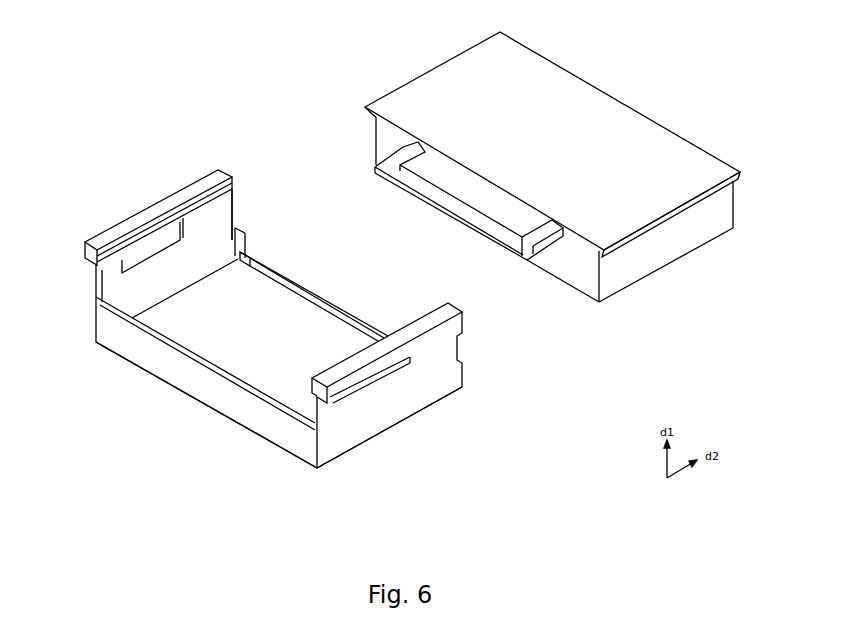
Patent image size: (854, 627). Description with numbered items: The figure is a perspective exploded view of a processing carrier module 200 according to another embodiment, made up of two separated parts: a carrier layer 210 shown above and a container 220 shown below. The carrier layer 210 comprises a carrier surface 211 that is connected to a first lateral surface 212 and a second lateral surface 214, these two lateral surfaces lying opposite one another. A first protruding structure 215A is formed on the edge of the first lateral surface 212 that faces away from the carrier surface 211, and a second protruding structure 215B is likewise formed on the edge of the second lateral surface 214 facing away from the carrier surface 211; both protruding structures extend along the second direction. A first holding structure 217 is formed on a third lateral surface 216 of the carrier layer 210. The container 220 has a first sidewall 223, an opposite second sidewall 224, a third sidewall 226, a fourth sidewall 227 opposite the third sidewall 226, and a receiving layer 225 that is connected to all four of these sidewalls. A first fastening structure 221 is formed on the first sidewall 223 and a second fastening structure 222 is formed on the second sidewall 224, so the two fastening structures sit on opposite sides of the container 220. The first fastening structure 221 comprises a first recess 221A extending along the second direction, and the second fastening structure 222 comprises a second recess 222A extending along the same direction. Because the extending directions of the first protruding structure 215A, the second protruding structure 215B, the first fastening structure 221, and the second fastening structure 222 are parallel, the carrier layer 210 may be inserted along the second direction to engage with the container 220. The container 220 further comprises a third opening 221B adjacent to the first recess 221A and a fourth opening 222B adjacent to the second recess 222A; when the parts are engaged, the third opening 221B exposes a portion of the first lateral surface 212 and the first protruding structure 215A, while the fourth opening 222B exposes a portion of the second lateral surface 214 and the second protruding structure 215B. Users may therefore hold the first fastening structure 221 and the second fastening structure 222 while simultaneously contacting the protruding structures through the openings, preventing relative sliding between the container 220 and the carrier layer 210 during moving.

The processing carrier module 200 is at (68, 49).
The carrier layer 210 is at (646, 80).
The carrier surface 211 is at (641, 283).
The first lateral surface 212 is at (671, 242).
The second lateral surface 214 is at (376, 137).
The first protruding structure 215A is at (740, 171).
The second protruding structure 215B is at (419, 84).
The third lateral surface 216 is at (572, 267).
The first holding structure 217 is at (425, 188).
The container 220 is at (108, 385).
The first fastening structure 221 is at (451, 303).
The first recess 221A is at (330, 404).
The third opening 221B is at (384, 377).
The second fastening structure 222 is at (90, 257).
The second recess 222A is at (96, 268).
The fourth opening 222B is at (166, 236).
The first sidewall 223 is at (465, 352).
The second sidewall 224 is at (229, 211).
The receiving layer 225 is at (260, 292).
The third sidewall 226 is at (198, 385).
The fourth sidewall 227 is at (320, 289).